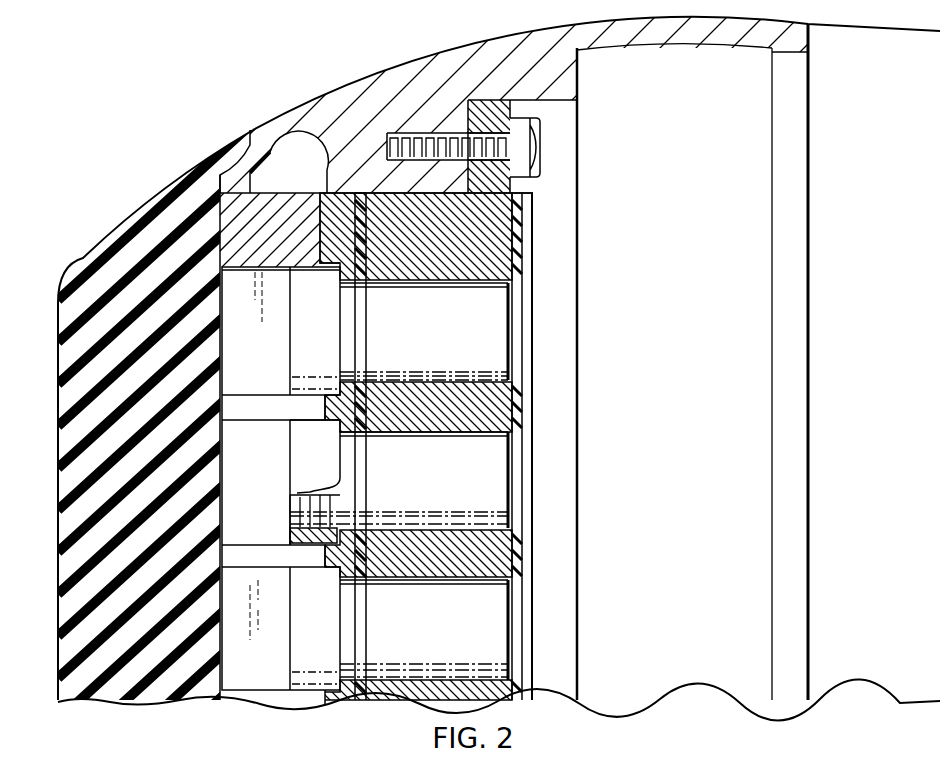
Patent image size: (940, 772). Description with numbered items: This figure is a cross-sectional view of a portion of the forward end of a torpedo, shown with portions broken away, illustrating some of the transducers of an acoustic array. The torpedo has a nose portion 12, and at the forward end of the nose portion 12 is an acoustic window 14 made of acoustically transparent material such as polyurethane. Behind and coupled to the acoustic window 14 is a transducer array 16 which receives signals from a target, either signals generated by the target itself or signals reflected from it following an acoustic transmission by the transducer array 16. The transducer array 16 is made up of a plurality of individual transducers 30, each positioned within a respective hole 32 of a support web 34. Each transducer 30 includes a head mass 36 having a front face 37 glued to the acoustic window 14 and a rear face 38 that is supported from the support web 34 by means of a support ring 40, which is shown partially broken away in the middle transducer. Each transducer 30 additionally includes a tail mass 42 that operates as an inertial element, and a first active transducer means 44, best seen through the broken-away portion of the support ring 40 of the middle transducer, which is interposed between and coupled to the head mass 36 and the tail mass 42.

The nose portion 12 is at (369, 84).
The acoustic window 14 is at (58, 457).
The transducer array 16 is at (614, 453).
The transducer 30 is at (500, 340).
The hole 32 is at (513, 283).
The support web 34 is at (493, 247).
The head mass 36 is at (266, 361).
The front face 37 is at (220, 338).
The rear face 38 is at (292, 312).
The support ring 40 is at (324, 336).
The tail mass 42 is at (472, 325).
The first active transducer means 44 is at (327, 498).